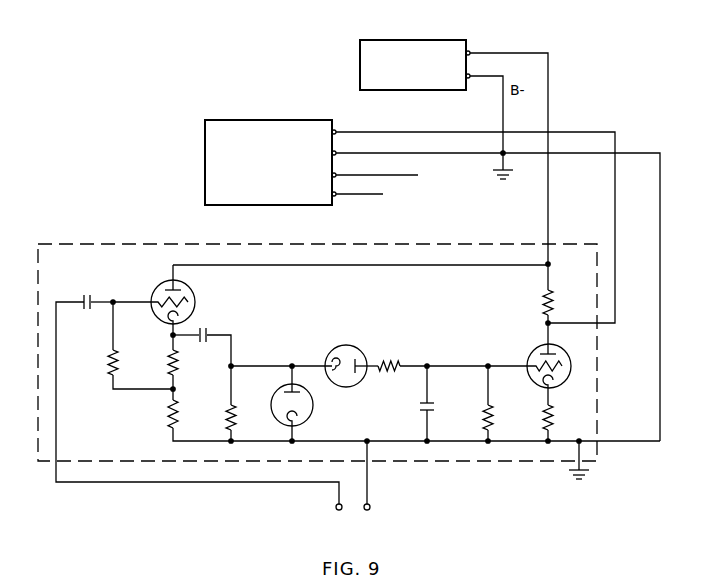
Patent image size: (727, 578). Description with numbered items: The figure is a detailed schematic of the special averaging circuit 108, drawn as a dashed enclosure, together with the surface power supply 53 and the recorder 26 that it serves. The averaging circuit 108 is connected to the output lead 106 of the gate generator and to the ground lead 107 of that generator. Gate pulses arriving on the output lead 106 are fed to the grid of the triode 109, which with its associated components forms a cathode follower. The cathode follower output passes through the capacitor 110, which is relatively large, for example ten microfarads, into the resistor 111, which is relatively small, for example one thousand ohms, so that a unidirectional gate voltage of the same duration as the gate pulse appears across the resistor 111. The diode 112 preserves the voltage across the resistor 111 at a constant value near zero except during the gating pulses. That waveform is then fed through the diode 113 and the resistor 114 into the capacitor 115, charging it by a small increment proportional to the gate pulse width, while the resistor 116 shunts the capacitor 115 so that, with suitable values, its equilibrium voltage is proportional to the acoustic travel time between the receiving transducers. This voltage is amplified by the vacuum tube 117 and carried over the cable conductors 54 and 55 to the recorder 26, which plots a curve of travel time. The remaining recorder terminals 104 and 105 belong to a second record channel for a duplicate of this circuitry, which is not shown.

The recorder 26 is at (252, 120).
The power supply 53 is at (360, 66).
The cable conductor 54 is at (549, 83).
The cable conductor 55 is at (579, 116).
The recorder terminal 104 is at (408, 176).
The recorder terminal 105 is at (368, 196).
The output lead 106 is at (335, 507).
The ground lead 107 is at (371, 507).
The averaging circuit 108 is at (86, 243).
The triode 109 is at (193, 297).
The capacitor 110 is at (205, 330).
The resistor 111 is at (217, 418).
The diode 112 is at (313, 404).
The diode 113 is at (339, 346).
The resistor 114 is at (388, 361).
The capacitor 115 is at (420, 407).
The resistor 116 is at (484, 398).
The vacuum tube 117 is at (535, 350).